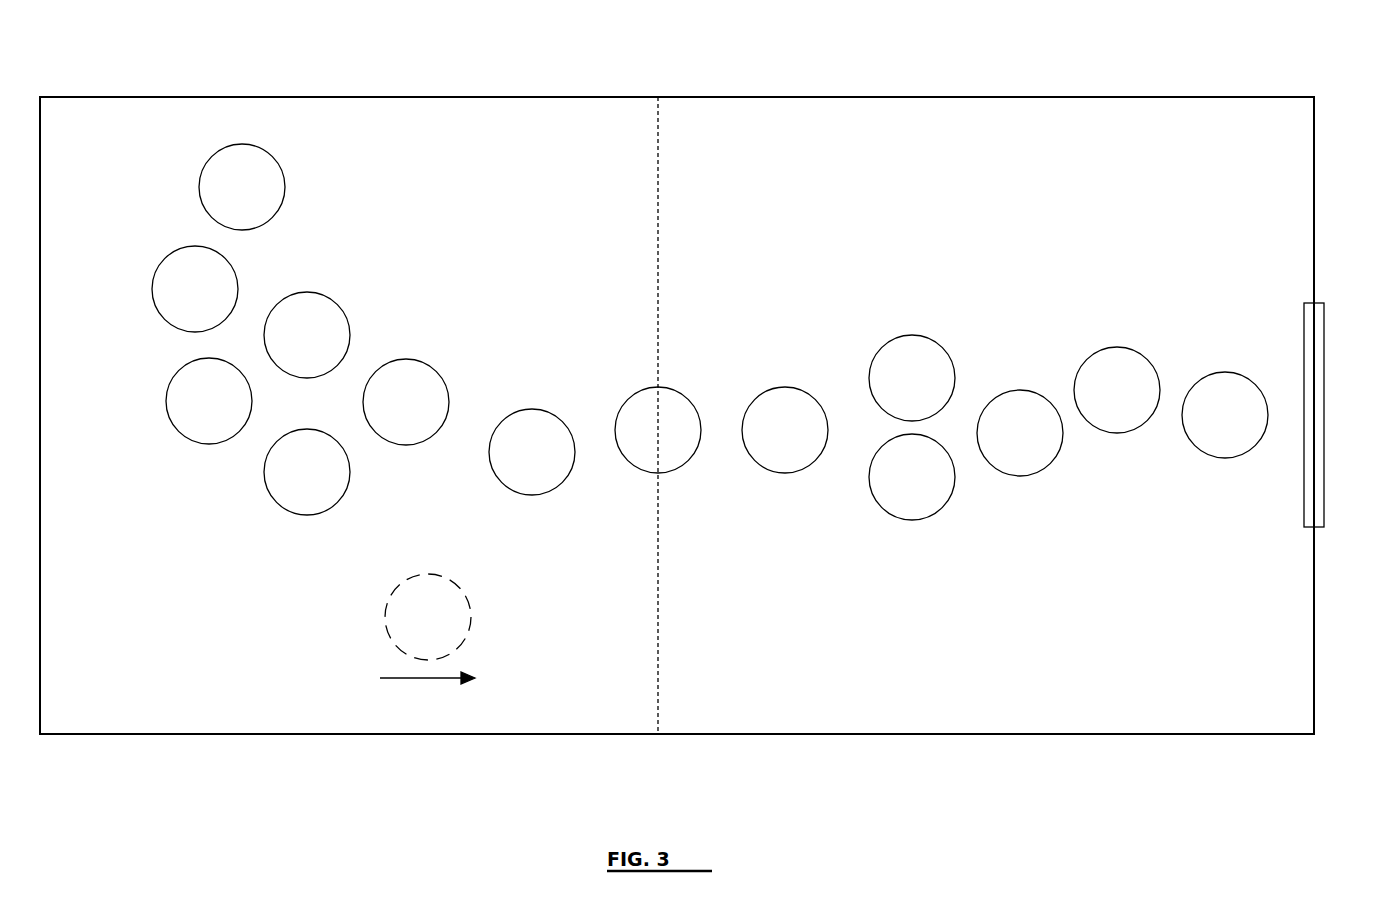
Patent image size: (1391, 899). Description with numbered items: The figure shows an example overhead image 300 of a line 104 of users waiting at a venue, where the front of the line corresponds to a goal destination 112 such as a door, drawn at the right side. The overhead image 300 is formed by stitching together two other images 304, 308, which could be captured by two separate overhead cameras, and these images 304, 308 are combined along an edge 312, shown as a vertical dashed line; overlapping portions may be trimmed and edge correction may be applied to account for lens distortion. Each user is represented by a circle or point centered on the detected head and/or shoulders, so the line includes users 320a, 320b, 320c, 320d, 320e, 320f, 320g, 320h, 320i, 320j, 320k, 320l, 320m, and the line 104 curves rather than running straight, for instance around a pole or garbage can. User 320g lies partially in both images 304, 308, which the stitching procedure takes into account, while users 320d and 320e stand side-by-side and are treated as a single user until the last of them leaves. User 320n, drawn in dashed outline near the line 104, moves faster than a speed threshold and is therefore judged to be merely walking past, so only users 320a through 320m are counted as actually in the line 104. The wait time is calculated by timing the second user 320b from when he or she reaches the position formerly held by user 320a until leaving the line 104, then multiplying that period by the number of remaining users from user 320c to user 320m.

The overhead image 300 is at (92, 97).
The image 304 is at (322, 720).
The image 308 is at (1015, 720).
The edge 312 is at (658, 699).
The goal destination 112 is at (1324, 527).
The line 104 is at (208, 585).
The user 320a is at (1225, 372).
The user 320b is at (1117, 347).
The user 320c is at (1020, 476).
The user 320d is at (912, 520).
The user 320e is at (912, 335).
The user 320f is at (785, 387).
The user 320g is at (680, 467).
The user 320h is at (407, 445).
The user 320i is at (308, 515).
The user 320j is at (335, 298).
The user 320k is at (191, 443).
The user 320l is at (158, 316).
The user 320m is at (284, 185).
The user 320n is at (472, 617).